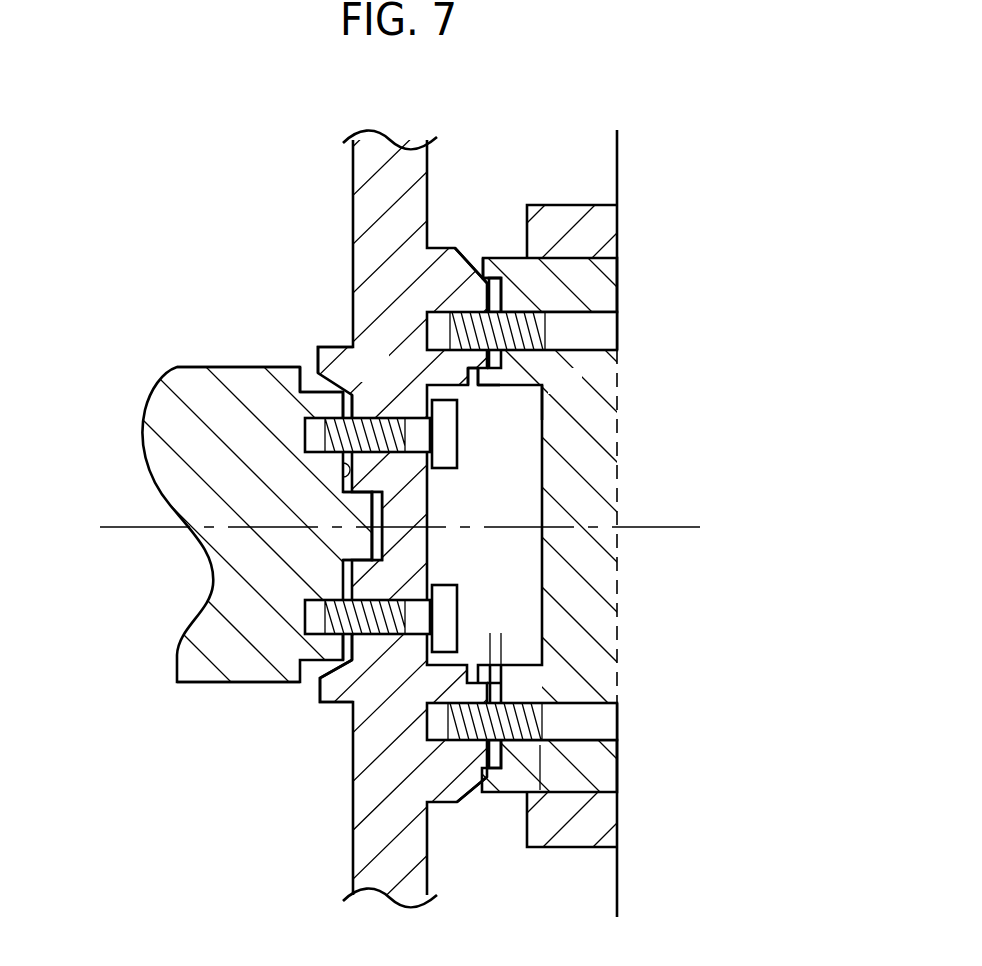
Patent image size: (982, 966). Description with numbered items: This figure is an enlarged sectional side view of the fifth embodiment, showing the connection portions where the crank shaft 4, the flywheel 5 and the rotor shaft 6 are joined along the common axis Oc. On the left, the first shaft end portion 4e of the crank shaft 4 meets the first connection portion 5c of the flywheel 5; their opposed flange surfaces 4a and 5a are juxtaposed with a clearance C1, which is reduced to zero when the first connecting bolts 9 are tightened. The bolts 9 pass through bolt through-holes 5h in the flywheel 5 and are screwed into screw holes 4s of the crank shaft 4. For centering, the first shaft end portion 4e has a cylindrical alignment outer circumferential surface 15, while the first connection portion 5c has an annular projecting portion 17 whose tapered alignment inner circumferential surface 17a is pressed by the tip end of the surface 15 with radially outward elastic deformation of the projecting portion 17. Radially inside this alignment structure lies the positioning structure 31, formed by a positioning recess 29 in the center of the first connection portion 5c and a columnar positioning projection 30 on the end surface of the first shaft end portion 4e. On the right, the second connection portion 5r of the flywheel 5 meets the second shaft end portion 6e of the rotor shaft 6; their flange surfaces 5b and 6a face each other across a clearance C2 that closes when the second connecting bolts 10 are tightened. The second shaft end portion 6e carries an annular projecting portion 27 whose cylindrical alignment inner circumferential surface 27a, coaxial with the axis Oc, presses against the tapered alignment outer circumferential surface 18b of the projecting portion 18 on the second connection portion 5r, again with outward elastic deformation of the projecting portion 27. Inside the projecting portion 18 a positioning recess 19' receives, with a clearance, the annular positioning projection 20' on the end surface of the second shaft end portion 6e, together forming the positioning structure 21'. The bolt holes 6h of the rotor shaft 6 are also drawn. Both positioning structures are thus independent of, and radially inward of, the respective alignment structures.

The crank shaft 4 is at (150, 415).
The flange surface 4a is at (342, 472).
The first shaft end portion 4e is at (313, 382).
The screw holes 4s is at (215, 385).
The flywheel 5 is at (383, 878).
The flange surface 5a is at (335, 432).
The flange surface 5b is at (515, 352).
The first connection portion 5c is at (314, 351).
The bolt through-holes 5h is at (352, 778).
The second connection portion 5r is at (478, 393).
The rotor shaft 6 is at (576, 775).
The flange surface 6a is at (490, 297).
The second shaft end portion 6e is at (490, 386).
The bolt hole of outer casing member 6h is at (585, 350).
The first connecting bolts 9 is at (462, 612).
The second connecting bolts 10 is at (588, 308).
The alignment outer circumferential surface 15 is at (330, 657).
The projecting portion 17 is at (350, 396).
The alignment inner circumferential surface 17a is at (314, 386).
The projecting portion 18 is at (467, 799).
The alignment outer circumferential surface 18b is at (483, 278).
The positioning recess 19' is at (400, 297).
The positioning projection 20' is at (614, 404).
The positioning structure 21' is at (499, 427).
The projecting portion 27 is at (497, 792).
The alignment inner circumferential surface 27a is at (543, 745).
The positioning recess 29 is at (340, 520).
The positioning projection 30 is at (375, 545).
The positioning structure 31 is at (384, 516).
The clearance C1 is at (397, 578).
The clearance C2 is at (468, 647).
The common axis Oc is at (424, 529).